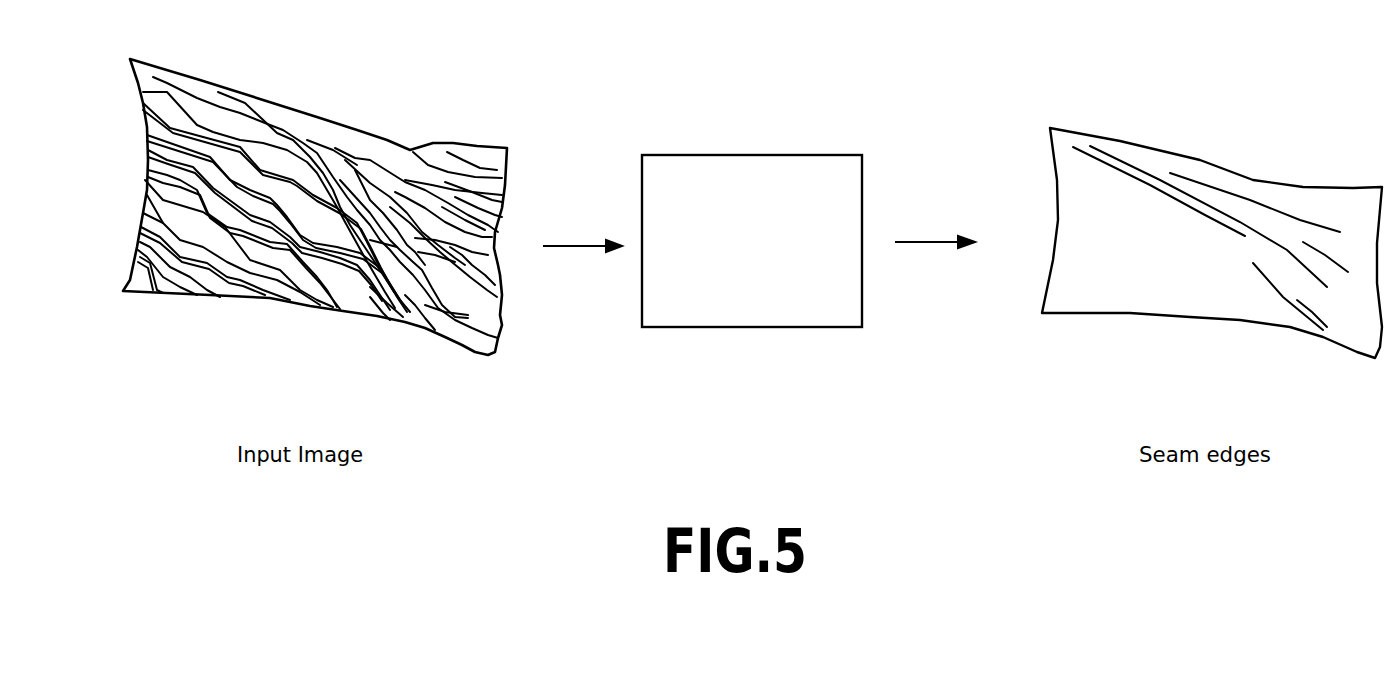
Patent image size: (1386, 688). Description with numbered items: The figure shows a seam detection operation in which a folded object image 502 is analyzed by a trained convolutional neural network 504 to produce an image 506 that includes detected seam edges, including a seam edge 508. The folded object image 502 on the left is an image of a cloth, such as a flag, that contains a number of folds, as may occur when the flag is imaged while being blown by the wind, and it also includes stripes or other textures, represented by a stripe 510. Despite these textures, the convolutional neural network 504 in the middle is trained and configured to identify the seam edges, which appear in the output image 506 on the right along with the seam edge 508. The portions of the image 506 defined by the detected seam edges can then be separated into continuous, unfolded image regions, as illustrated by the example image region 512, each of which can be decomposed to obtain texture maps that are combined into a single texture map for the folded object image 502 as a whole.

The folded object image 502 is at (362, 86).
The convolutional neural network 504 is at (731, 279).
The image 506 is at (1188, 211).
The seam edge 508 is at (1104, 167).
The stripe 510 is at (270, 290).
The image region 512 is at (1168, 279).